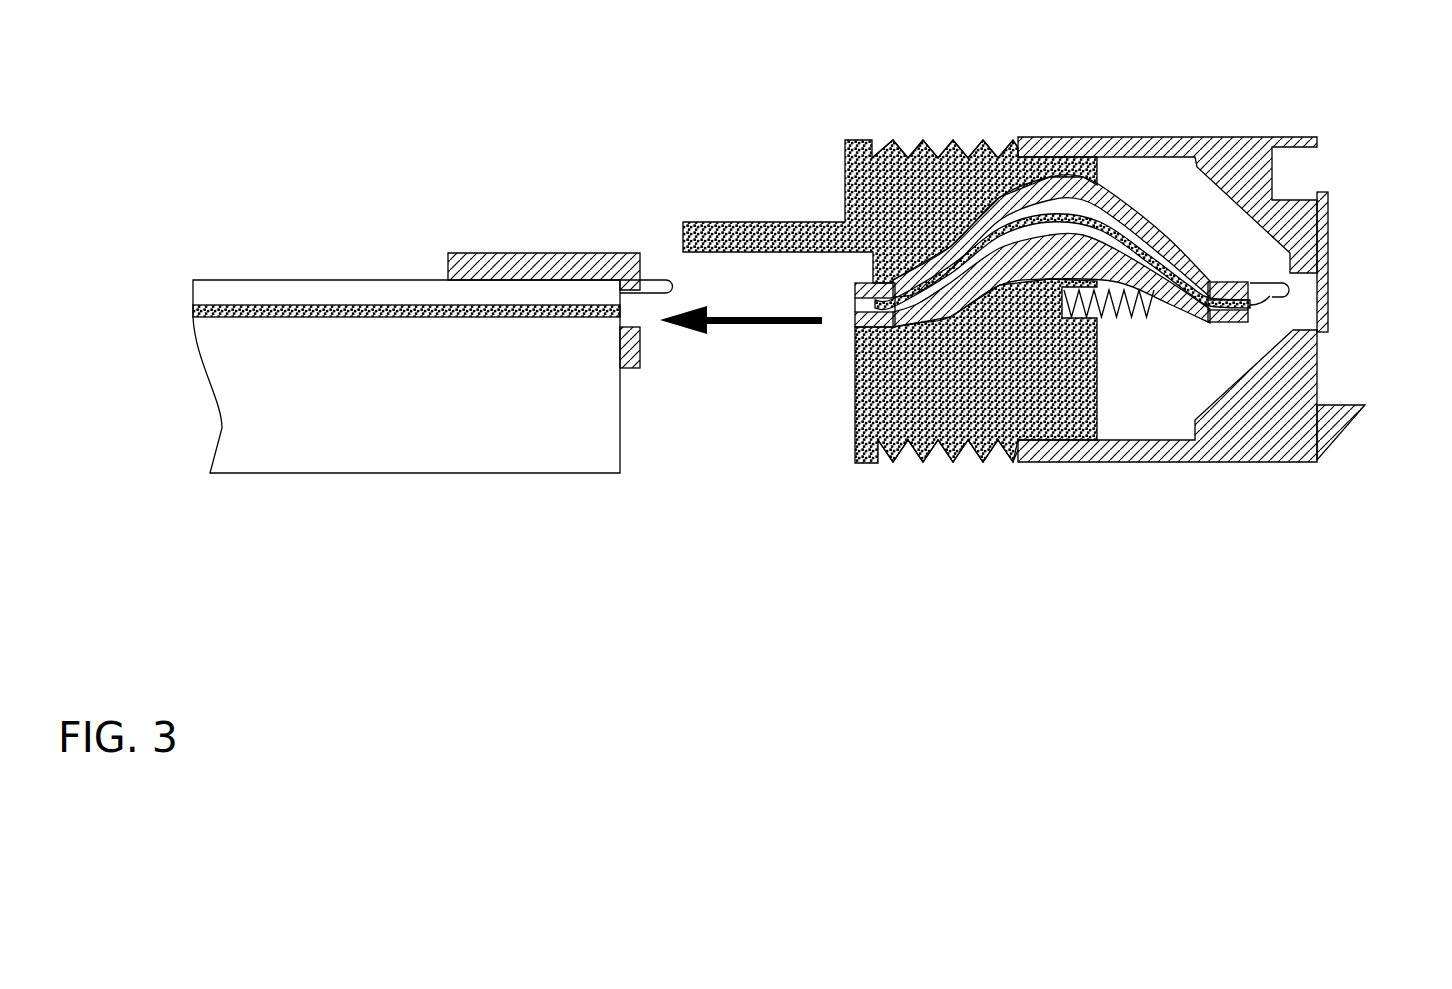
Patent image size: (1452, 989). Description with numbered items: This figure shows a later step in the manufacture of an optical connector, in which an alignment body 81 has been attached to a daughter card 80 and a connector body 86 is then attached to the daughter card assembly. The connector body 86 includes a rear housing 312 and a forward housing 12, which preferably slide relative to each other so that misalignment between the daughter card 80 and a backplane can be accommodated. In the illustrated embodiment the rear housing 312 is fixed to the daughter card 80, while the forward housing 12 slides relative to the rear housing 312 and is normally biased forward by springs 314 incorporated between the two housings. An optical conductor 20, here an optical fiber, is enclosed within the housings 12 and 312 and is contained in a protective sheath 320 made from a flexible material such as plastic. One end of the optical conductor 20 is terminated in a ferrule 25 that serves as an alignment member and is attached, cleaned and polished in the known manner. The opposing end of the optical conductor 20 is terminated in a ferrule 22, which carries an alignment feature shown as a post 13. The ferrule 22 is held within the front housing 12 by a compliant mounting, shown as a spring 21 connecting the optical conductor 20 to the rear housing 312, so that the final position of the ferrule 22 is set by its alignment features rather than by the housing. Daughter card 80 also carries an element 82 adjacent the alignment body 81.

The daughter card 80 is at (218, 447).
The alignment body 81 is at (513, 252).
The contact pin 82 is at (660, 280).
The connector body 86 is at (772, 152).
The rear housing 312 is at (940, 188).
The springs 314 is at (953, 145).
The protective sheath 320 is at (1118, 217).
The optical conductor 20 is at (1043, 215).
The ferrule 25 is at (862, 328).
The ferrule 22 is at (1228, 326).
The post 13 is at (1260, 303).
The spring 21 is at (1117, 322).
The forward housing 12 is at (1253, 142).